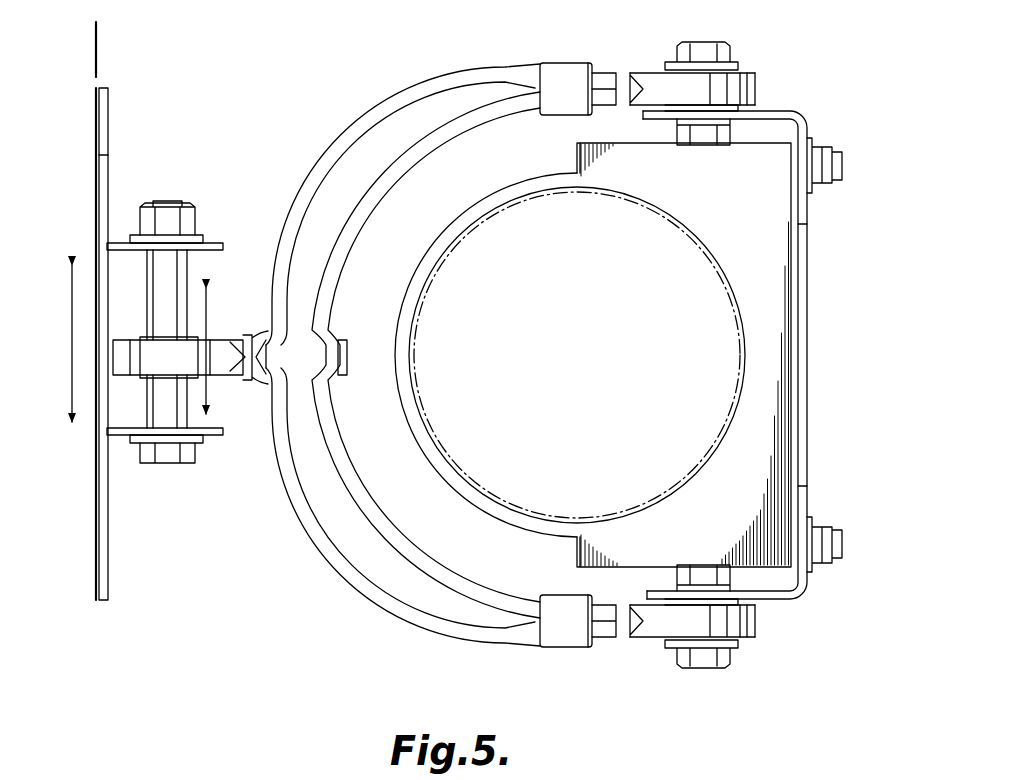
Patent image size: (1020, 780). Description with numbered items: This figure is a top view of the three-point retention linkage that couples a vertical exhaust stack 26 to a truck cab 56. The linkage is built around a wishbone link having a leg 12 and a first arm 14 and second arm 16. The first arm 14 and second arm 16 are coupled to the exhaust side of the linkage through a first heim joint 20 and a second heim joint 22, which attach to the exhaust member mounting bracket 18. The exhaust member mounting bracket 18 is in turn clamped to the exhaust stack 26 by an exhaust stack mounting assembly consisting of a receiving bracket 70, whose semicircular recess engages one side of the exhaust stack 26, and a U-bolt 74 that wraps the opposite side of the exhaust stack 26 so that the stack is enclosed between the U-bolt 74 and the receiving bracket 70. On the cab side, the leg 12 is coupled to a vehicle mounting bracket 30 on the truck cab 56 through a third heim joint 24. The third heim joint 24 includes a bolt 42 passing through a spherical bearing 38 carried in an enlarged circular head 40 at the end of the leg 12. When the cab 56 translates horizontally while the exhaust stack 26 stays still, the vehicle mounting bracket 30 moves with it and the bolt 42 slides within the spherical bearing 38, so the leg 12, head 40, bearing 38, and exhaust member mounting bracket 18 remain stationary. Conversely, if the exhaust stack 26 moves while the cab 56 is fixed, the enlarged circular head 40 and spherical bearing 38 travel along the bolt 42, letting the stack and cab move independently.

The leg 12 is at (249, 398).
The first arm 14 is at (490, 612).
The second arm 16 is at (490, 71).
The exhaust member mounting bracket 18 is at (812, 350).
The first heim joint 20 is at (758, 652).
The second heim joint 22 is at (755, 57).
The third heim joint 24 is at (243, 322).
The exhaust stack 26 is at (592, 360).
The vehicle mounting bracket 30 is at (116, 137).
The spherical bearing 38 is at (168, 396).
The enlarged circular head 40 is at (128, 376).
The bolt 42 is at (186, 277).
The truck cab 56 is at (76, 160).
The receiving bracket 70 is at (790, 453).
The U-bolt 74 is at (435, 466).